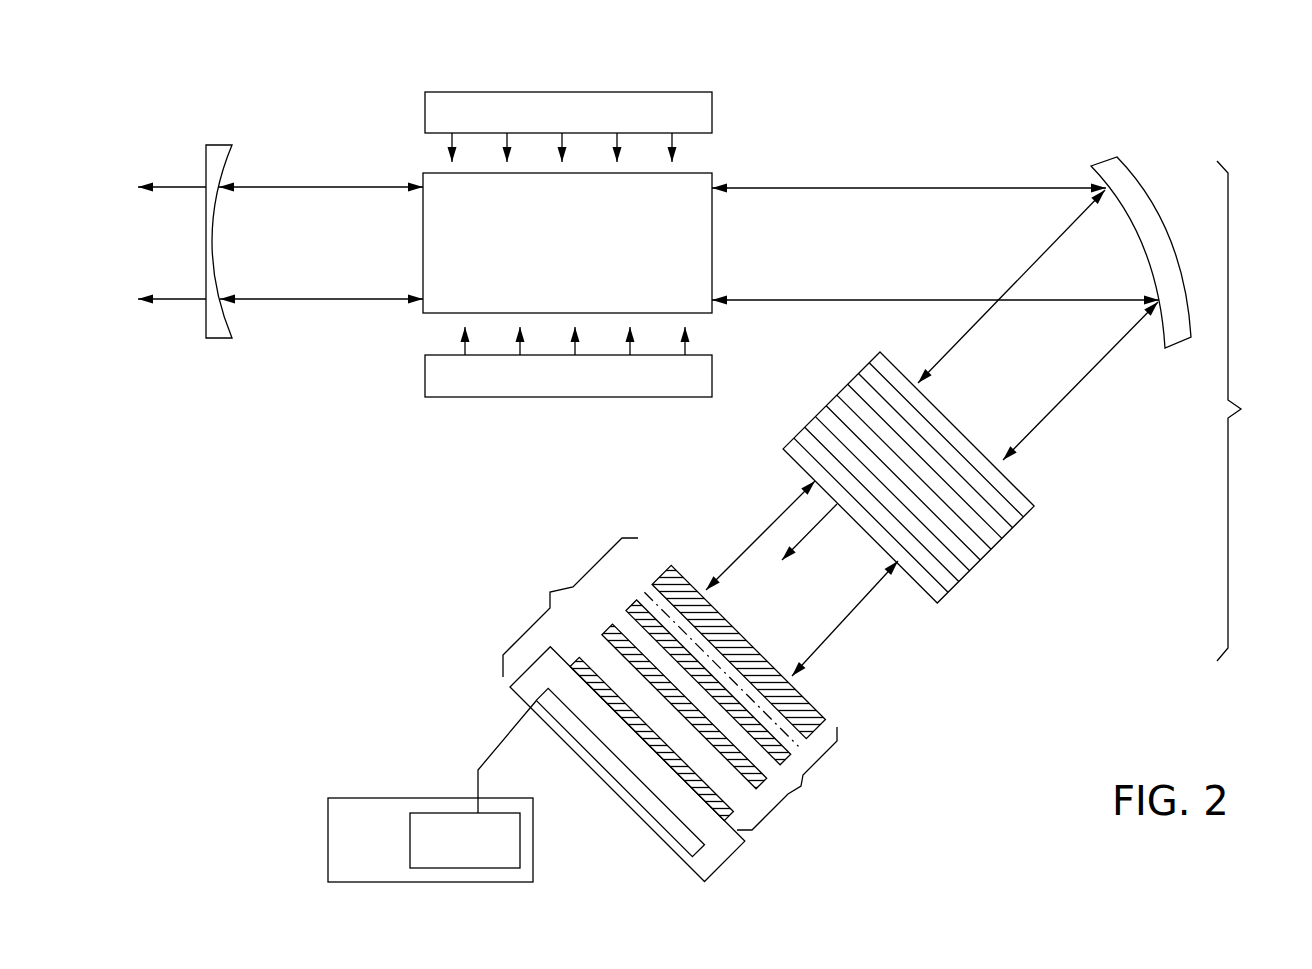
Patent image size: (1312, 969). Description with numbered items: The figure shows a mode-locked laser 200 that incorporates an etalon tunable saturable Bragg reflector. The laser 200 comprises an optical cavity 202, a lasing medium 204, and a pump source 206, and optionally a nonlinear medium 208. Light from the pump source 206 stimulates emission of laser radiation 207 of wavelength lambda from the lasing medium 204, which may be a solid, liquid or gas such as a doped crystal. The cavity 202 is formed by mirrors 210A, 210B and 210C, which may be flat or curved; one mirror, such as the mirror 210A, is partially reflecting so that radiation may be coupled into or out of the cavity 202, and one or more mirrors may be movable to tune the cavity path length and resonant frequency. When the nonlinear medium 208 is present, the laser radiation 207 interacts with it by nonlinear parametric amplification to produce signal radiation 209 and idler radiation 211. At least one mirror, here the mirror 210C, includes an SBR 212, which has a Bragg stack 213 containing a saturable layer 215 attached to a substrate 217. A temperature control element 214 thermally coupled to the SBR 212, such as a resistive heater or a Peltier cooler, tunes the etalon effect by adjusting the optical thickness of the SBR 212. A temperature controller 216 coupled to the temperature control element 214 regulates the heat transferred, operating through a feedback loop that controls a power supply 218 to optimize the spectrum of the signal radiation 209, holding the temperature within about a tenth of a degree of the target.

The laser 200 is at (273, 103).
The optical cavity 202 is at (1257, 411).
The lasing medium 204 is at (580, 225).
The pump source 206 is at (553, 128).
The laser radiation 207 is at (368, 301).
The nonlinear medium 208 is at (980, 560).
The signal radiation 209 is at (819, 525).
The mirror 210A is at (217, 340).
The mirror 210B is at (1104, 157).
The mirror 210C is at (713, 727).
The idler radiation 211 is at (870, 558).
The SBR 212 is at (570, 607).
The Bragg stack 213 is at (792, 778).
The temperature control element 214 is at (642, 803).
The saturable layer 215 is at (797, 700).
The temperature controller 216 is at (432, 791).
The substrate 217 is at (730, 858).
The power supply 218 is at (482, 851).